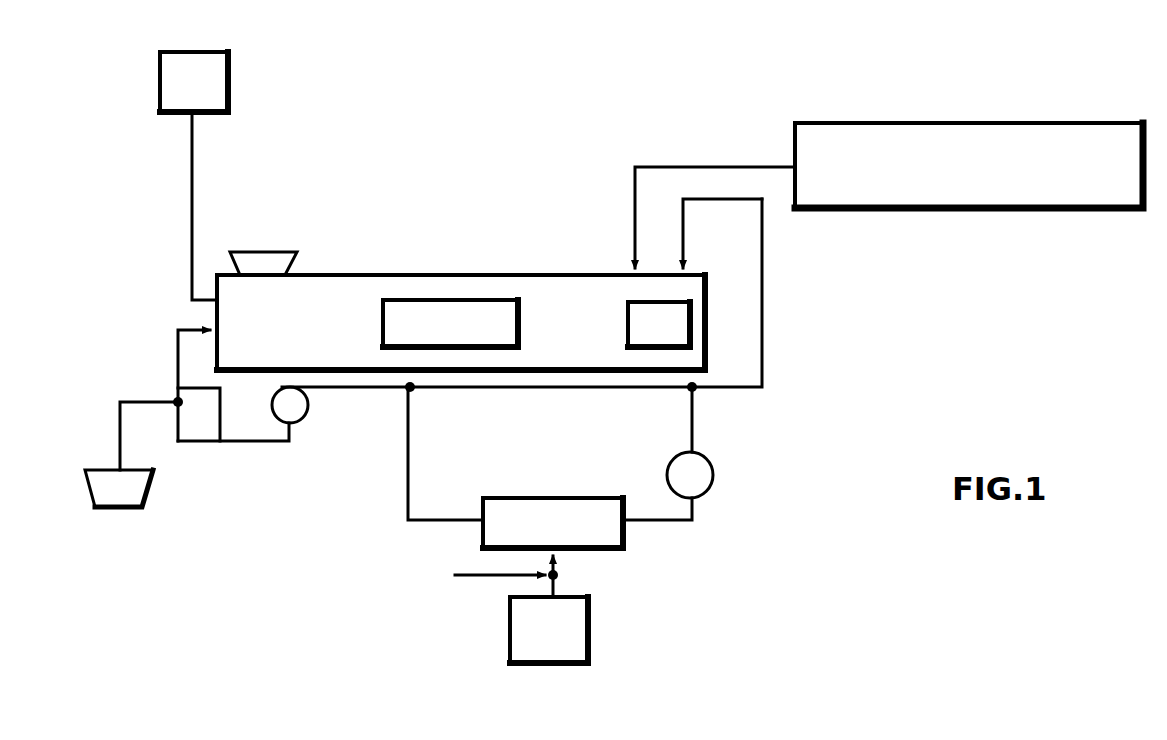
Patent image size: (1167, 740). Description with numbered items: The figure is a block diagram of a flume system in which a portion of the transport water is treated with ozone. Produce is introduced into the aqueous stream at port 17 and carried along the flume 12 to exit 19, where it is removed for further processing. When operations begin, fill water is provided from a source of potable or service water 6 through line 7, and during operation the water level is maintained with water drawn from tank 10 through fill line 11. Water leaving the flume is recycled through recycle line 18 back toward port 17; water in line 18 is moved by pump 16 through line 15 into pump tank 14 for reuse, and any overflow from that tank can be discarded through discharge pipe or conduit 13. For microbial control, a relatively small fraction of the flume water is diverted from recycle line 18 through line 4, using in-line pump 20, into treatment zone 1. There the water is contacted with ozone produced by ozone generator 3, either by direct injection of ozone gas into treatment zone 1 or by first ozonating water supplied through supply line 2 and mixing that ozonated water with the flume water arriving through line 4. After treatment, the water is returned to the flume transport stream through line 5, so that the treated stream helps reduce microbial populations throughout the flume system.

The treatment zone 1 is at (623, 545).
The supply line 2 is at (470, 576).
The ozone generator 3 is at (588, 663).
The line 4 is at (692, 428).
The line 5 is at (408, 462).
The source of potable or service water 6 is at (228, 78).
The line 7 is at (192, 172).
The tank 10 is at (955, 125).
The fill line 11 is at (676, 165).
The flume 12 is at (333, 272).
The discharge pipe or conduit 13 is at (138, 508).
The pump tank 14 is at (200, 432).
The line 15 is at (273, 442).
The pump 16 is at (308, 405).
The port 17 is at (262, 250).
The recycle line 18 is at (722, 388).
The exit 19 is at (628, 320).
The in-line pump 20 is at (708, 483).